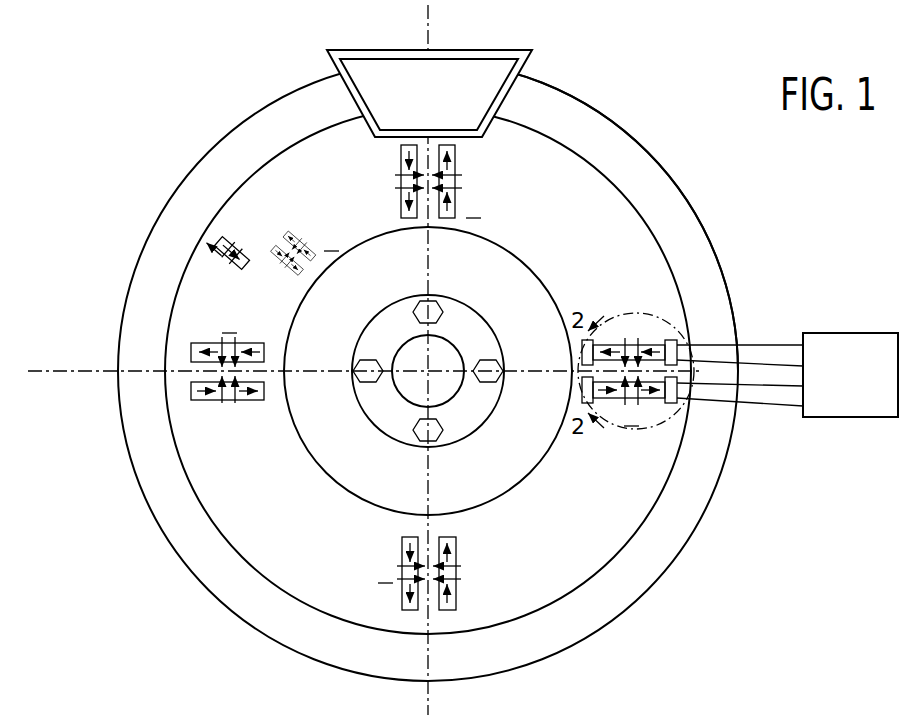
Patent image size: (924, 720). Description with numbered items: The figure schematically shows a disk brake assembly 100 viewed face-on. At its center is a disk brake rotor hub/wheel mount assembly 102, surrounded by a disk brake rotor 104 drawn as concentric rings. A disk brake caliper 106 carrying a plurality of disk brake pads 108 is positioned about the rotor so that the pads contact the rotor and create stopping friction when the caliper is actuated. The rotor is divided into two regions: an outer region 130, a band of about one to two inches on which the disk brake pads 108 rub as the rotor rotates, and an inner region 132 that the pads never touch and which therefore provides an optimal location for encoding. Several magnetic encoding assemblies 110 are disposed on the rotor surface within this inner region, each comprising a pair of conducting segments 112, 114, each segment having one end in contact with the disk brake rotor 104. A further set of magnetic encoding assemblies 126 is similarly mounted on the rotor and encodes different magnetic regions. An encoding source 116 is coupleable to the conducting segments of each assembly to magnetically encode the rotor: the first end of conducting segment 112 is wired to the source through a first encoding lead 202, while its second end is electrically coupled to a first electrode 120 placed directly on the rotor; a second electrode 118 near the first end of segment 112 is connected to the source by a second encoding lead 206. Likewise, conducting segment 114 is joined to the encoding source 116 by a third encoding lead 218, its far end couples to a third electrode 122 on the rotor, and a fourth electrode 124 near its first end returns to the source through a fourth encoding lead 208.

The disk brake assembly 100 is at (658, 102).
The disk brake rotor hub/wheel mount assembly 102 is at (534, 497).
The disk brake rotor 104 is at (722, 270).
The disk brake caliper 106 is at (547, 42).
The disk brake pads 108 is at (520, 92).
The magnetic encoding assemblies 110 is at (432, 378).
The conducting segment 112 is at (398, 180).
The conducting segment 114 is at (460, 180).
The encoding source 116 is at (852, 418).
The second electrode 118 is at (680, 349).
The first electrode 120 is at (581, 351).
The third electrode 122 is at (581, 390).
The fourth electrode 124 is at (670, 404).
The magnetic encoding assemblies 126 is at (212, 204).
The outer region 130 is at (652, 185).
The inner region 132 is at (632, 257).
The first encoding lead 202 is at (778, 345).
The second encoding lead 206 is at (790, 364).
The fourth encoding lead 208 is at (787, 406).
The third encoding lead 218 is at (760, 386).